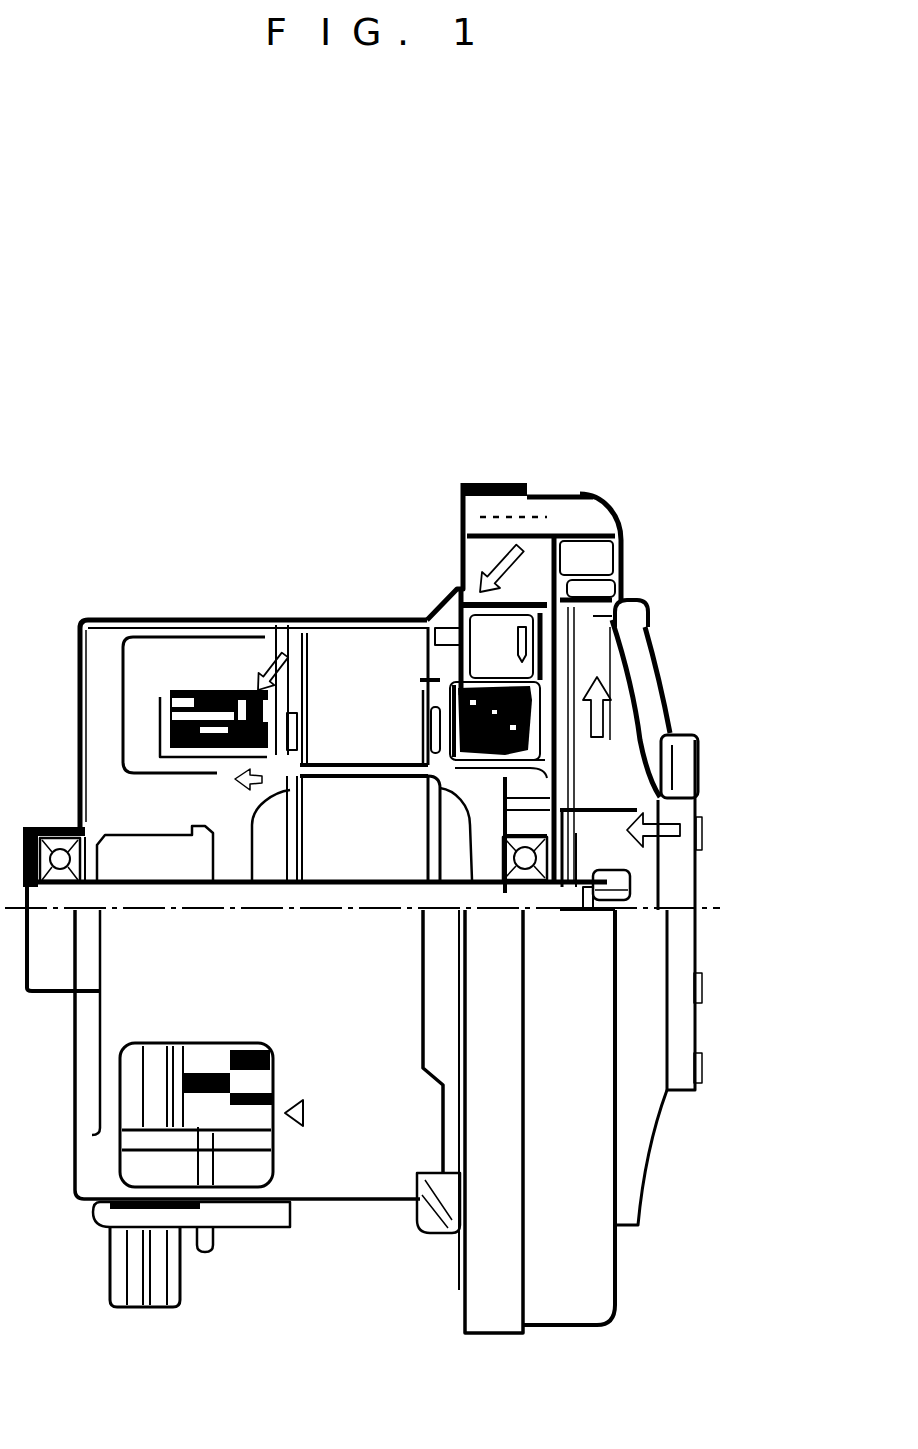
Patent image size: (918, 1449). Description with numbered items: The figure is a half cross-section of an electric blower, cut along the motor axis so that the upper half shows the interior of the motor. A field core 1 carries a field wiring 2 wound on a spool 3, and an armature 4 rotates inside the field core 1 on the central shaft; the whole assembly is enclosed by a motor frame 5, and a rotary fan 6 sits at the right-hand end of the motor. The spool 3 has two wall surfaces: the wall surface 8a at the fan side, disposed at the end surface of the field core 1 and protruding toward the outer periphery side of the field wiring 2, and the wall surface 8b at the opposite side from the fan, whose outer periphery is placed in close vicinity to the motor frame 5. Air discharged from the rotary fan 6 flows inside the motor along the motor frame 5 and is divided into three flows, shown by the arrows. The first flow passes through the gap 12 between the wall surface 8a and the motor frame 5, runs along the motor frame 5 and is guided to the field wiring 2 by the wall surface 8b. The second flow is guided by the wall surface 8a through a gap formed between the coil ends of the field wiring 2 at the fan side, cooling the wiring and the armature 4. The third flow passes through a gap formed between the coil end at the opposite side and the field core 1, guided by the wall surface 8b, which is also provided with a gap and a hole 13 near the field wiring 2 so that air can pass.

The field core 1 is at (347, 720).
The field wiring 2 is at (182, 698).
The spool 3 is at (460, 697).
The armature 4 is at (380, 843).
The motor frame 5 is at (388, 622).
The rotary fan 6 is at (595, 617).
The wall surface of the spool 8a is at (445, 650).
The wall surface of the spool 8b is at (308, 617).
The gap 12 is at (447, 603).
The hole 13 is at (283, 620).